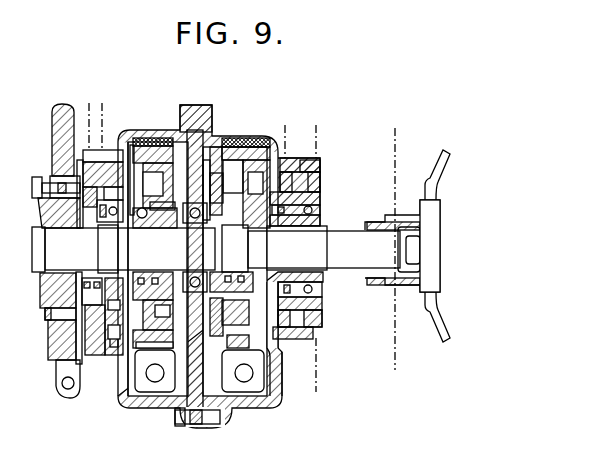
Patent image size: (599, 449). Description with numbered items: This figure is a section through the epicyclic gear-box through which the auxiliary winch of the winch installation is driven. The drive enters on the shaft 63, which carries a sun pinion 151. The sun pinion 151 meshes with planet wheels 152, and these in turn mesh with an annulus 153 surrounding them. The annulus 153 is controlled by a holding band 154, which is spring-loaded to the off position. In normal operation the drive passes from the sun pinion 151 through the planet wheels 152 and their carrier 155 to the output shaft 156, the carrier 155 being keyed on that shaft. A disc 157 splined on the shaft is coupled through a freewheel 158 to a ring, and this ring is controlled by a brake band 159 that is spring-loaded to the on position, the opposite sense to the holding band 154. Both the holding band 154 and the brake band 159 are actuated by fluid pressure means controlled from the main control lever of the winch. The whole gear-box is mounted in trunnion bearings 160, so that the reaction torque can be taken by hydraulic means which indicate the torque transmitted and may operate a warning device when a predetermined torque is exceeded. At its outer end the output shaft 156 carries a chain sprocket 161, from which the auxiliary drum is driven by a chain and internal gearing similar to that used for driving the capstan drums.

The shaft 63 is at (345, 232).
The sun pinion 151 is at (256, 253).
The planet wheels 152 is at (284, 156).
The annulus 153 is at (316, 165).
The holding band 154 is at (246, 140).
The carrier 155 is at (214, 145).
The output shaft 156 is at (193, 255).
The disc 157 is at (155, 295).
The freewheel 158 is at (143, 145).
The brake band 159 is at (148, 173).
The trunnion bearings 160 is at (300, 158).
The chain sprocket 161 is at (71, 392).